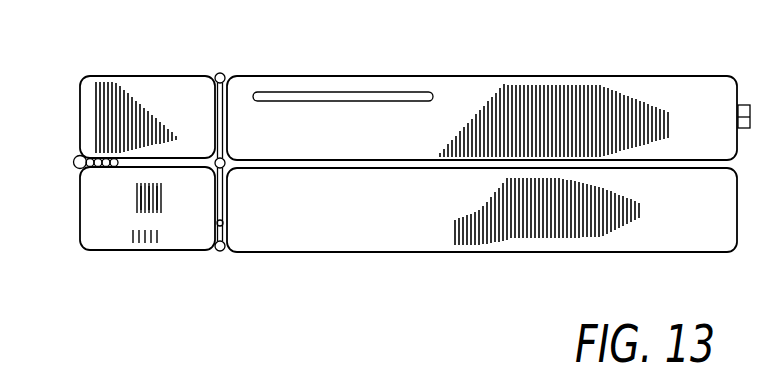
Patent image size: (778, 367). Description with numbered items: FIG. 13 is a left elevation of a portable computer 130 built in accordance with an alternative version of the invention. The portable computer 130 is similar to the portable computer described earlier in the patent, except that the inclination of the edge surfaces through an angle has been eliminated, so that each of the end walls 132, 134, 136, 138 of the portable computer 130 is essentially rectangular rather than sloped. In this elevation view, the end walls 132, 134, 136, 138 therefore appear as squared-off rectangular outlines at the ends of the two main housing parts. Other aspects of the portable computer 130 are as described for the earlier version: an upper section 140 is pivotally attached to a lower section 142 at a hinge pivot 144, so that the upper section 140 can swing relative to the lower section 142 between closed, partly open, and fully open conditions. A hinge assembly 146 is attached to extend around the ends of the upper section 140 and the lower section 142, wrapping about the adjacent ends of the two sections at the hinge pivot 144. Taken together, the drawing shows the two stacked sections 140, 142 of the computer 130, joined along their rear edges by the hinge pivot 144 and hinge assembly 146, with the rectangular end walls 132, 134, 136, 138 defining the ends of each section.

The portable computer 130 is at (289, 273).
The end wall 132 is at (165, 113).
The end wall 134 is at (439, 110).
The end wall 136 is at (176, 202).
The end wall 138 is at (416, 208).
The upper section 140 is at (570, 77).
The lower section 142 is at (512, 252).
The hinge pivot 144 is at (113, 163).
The hinge assembly 146 is at (75, 156).